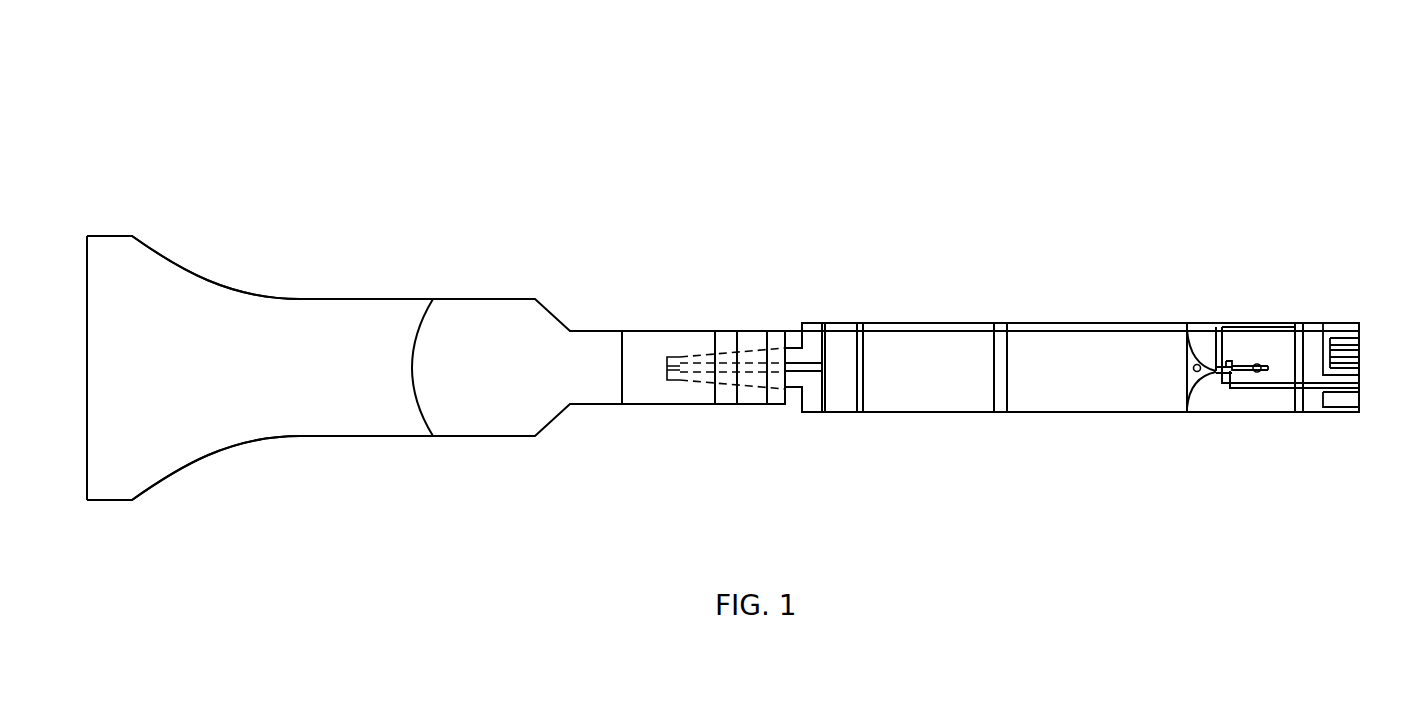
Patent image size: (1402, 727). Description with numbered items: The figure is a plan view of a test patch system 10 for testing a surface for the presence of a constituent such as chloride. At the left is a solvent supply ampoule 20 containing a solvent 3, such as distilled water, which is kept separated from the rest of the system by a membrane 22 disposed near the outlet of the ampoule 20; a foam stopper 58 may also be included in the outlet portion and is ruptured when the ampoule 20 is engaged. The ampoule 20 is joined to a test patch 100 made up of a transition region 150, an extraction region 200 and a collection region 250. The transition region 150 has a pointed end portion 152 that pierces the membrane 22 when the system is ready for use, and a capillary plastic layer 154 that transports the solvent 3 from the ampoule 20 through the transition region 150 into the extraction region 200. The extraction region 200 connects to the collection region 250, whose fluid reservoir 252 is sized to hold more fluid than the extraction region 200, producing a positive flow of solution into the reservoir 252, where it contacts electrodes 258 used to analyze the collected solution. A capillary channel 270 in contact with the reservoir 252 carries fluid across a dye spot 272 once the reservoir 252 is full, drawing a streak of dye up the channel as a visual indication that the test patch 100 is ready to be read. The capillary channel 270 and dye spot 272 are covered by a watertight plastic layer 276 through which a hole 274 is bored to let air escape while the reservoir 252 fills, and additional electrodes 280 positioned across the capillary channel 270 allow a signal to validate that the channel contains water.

The test patch system 10 is at (1105, 72).
The solvent supply ampoule 20 is at (190, 467).
The solvent 3 is at (328, 380).
The foam stopper 58 is at (648, 395).
The end portion 152 is at (668, 382).
The capillary plastic layer 154 is at (750, 360).
The membrane 22 is at (730, 396).
The transition region 150 is at (838, 328).
The test patch 100 is at (888, 322).
The extraction region 200 is at (973, 330).
The fluid reservoir 252 is at (1125, 328).
The collection region 250 is at (1198, 326).
The capillary channel 270 is at (1192, 396).
The dye spot 272 is at (1199, 378).
The additional electrodes 280 is at (1230, 326).
The hole 274 is at (1258, 362).
The watertight plastic layer 276 is at (1313, 326).
The electrodes 258 is at (1345, 328).